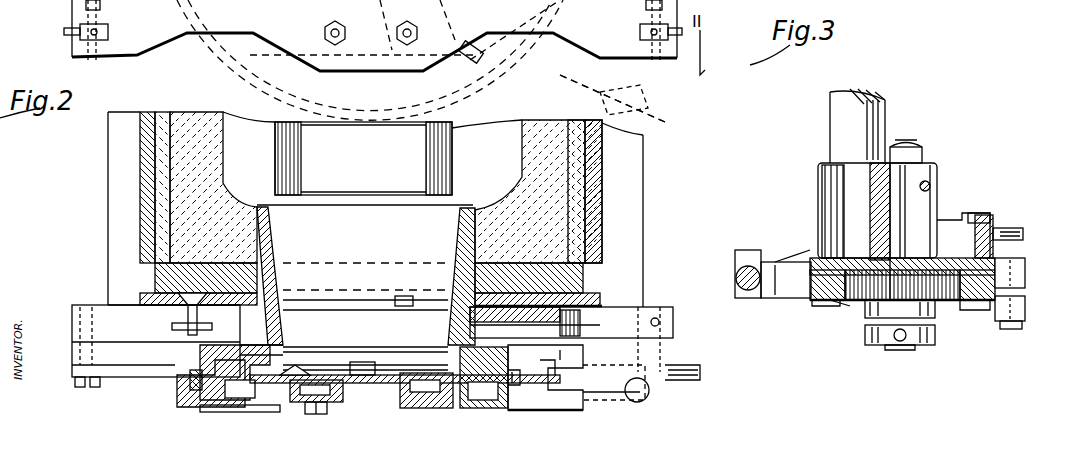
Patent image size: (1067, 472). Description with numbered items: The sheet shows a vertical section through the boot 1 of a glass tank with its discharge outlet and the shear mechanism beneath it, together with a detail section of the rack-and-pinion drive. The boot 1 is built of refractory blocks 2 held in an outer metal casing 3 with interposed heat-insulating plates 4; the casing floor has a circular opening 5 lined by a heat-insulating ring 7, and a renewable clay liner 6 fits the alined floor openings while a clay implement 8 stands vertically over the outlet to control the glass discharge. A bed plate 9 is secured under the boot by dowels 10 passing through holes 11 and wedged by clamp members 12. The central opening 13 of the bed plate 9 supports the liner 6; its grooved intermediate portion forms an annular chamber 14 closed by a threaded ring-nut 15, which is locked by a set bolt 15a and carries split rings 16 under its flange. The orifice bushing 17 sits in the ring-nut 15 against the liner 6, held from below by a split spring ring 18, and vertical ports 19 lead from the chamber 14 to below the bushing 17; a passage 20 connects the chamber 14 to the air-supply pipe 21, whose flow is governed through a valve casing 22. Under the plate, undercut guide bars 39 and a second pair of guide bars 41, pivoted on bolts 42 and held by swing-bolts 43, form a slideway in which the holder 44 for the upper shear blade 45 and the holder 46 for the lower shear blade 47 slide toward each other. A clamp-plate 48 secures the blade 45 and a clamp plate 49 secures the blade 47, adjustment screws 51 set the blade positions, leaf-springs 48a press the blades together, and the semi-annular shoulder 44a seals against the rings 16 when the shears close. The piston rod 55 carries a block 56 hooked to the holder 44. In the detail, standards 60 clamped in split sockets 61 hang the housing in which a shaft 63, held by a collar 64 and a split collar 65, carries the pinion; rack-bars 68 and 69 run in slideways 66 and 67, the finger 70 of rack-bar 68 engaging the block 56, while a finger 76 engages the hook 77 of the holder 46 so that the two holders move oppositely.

In FIG. 2, the boot 1 is at (250, 125).
In FIG. 2, the refractory blocks 2 is at (226, 186).
In FIG. 2, the outer metal casing 3 is at (108, 189).
In FIG. 2, the heat-insulating plates 4 is at (585, 274).
In FIG. 2, the circular opening 5 is at (452, 298).
In FIG. 2, the clay liner 6 is at (366, 275).
In FIG. 2, the heat-insulating ring 7 is at (278, 292).
In FIG. 2, the clay implement 8 is at (363, 158).
In FIG. 2, the bed plate 9 is at (102, 303).
In FIG. 2, the dowels 10 is at (180, 320).
In FIG. 2, the holes 11 is at (148, 300).
In FIG. 2, the wedge members 12 is at (170, 328).
In FIG. 2, the central circular opening 13 is at (290, 300).
In FIG. 2, the annular chamber 14 is at (488, 325).
In FIG. 2, the ring-nut 15 is at (456, 327).
In FIG. 2, the set bolt 15a is at (478, 60).
In FIG. 2, the split rings 16 is at (520, 350).
In FIG. 2, the orifice bushing 17 is at (406, 296).
In FIG. 2, the split spring ring 18 is at (392, 298).
In FIG. 2, the vertical ports 19 is at (325, 300).
In FIG. 2, the passage 20 is at (553, 323).
In FIG. 2, the compressed air-supply pipe 21 is at (584, 325).
In FIG. 3, the valve casing 22 is at (995, 235).
In FIG. 2, the undercut guide bars 39 is at (74, 355).
In FIG. 2, the guide bars 41 is at (668, 106).
In FIG. 2, the bolts 42 is at (403, 43).
In FIG. 2, the swing-bolts 43 is at (78, 30).
In FIG. 2, the upper shear blade holder 44 is at (545, 408).
In FIG. 2, the semi-annular shoulder 44a is at (611, 382).
In FIG. 2, the upper shear blade 45 is at (380, 375).
In FIG. 2, the lower shear blade holder 46 is at (205, 357).
In FIG. 2, the lower shear blade 47 is at (353, 375).
In FIG. 2, the clamp-plate 48 is at (399, 377).
In FIG. 2, the leaf-springs 48a is at (349, 414).
In FIG. 2, the clamp plate 49 is at (303, 375).
In FIG. 2, the adjustment screws 51 is at (505, 385).
In FIG. 2, the piston rod 55 is at (700, 368).
In FIG. 3, the piston rod 55 is at (737, 273).
In FIG. 2, the block 56 is at (630, 400).
In FIG. 3, the block 56 is at (737, 254).
In FIG. 3, the standards 60 is at (836, 116).
In FIG. 3, the split sockets 61 is at (858, 211).
In FIG. 3, the shaft 63 is at (912, 138).
In FIG. 3, the collar 64 is at (930, 344).
In FIG. 3, the split collar 65 is at (938, 188).
In FIG. 3, the slideway 66 is at (818, 312).
In FIG. 3, the slideway 67 is at (968, 312).
In FIG. 3, the rack-bar 68 is at (838, 308).
In FIG. 3, the rack-bar 69 is at (962, 240).
In FIG. 3, the finger 70 is at (786, 285).
In FIG. 2, the finger 76 is at (180, 382).
In FIG. 2, the hook 77 is at (178, 396).